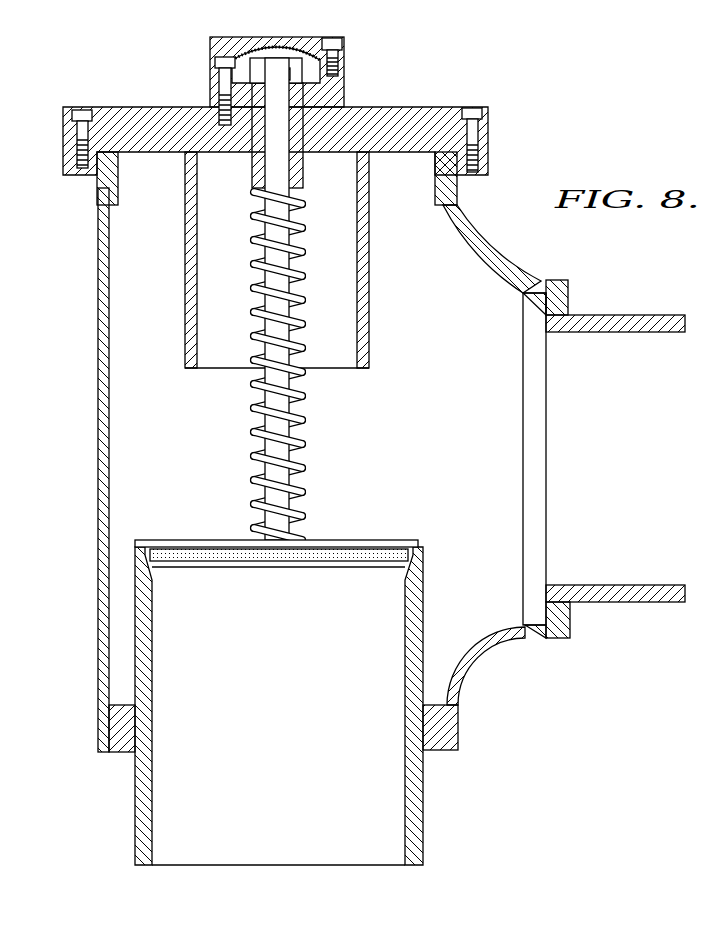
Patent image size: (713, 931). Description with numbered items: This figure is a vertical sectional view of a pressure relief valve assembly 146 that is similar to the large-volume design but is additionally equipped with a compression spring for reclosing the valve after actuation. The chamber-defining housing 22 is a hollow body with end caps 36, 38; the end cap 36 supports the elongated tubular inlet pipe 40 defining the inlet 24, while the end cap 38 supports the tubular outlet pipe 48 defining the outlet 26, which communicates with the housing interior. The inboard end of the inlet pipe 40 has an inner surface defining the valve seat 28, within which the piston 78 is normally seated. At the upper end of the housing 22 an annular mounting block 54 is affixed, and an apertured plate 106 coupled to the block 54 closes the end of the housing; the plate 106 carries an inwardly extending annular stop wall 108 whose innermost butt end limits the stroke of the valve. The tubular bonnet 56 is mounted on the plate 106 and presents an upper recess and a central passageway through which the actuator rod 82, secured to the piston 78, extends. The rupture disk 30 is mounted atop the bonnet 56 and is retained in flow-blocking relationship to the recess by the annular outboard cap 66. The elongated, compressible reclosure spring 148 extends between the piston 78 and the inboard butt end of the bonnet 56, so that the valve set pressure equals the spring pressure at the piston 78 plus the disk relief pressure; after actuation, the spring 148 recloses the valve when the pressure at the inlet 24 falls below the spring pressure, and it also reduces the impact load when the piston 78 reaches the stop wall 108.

The valve assembly 146 is at (321, 405).
The apertured plate 106 is at (148, 114).
The annular mounting block 54 is at (70, 157).
The rupture disk 30 is at (264, 48).
The annular outboard cap 66 is at (312, 40).
The tubular bonnet 56 is at (336, 92).
The housing 22 is at (508, 256).
The outlet 26 is at (604, 454).
The annular stop wall 108 is at (366, 335).
The reclosure spring 148 is at (262, 388).
The actuator rod 82 is at (283, 407).
The piston 78 is at (205, 543).
The valve seat 28 is at (307, 525).
The outlet pipe 48 is at (637, 596).
The end cap 38 is at (566, 622).
The end cap 36 is at (455, 742).
The inlet 24 is at (295, 706).
The inlet pipe 40 is at (140, 818).